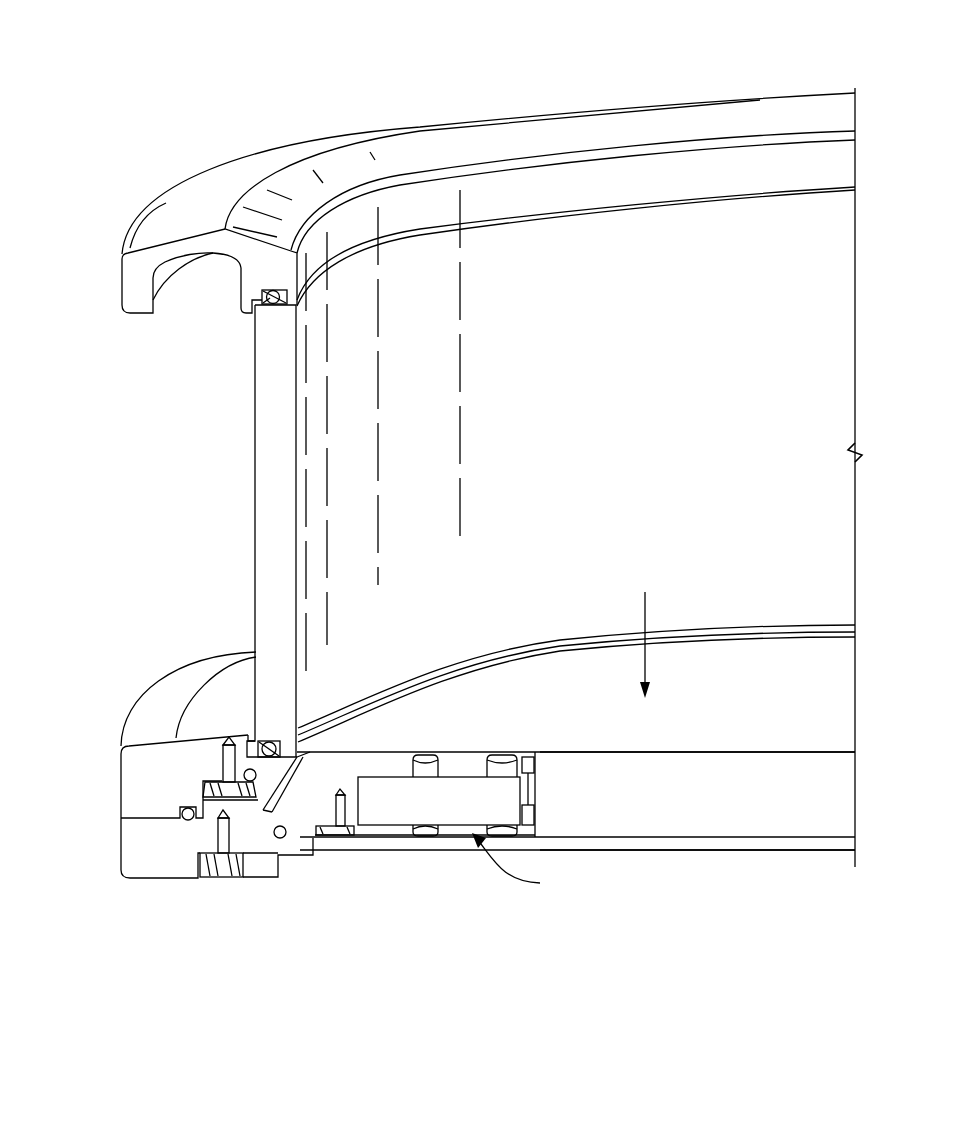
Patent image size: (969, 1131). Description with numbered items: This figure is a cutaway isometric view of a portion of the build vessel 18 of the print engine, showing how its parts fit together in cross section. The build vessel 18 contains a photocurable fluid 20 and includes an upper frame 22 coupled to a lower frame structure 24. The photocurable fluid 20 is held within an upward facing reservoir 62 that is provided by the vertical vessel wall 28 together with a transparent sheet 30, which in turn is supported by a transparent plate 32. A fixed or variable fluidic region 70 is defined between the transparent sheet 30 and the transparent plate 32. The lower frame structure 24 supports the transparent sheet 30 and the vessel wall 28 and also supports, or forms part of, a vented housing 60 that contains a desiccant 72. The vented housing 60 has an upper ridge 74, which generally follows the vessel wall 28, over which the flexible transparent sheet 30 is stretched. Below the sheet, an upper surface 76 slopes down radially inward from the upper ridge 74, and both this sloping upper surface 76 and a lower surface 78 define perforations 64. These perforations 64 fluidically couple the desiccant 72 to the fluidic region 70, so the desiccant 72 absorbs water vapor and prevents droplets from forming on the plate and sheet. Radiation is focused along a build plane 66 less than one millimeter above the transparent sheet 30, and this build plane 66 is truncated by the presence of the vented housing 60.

The build vessel 18 is at (345, 68).
The photocurable fluid 20 is at (672, 468).
The upper frame 22 is at (137, 283).
The lower frame structure 24 is at (103, 744).
The vessel wall 28 is at (262, 479).
The transparent sheet 30 is at (823, 752).
The transparent plate 32 is at (708, 850).
The vented housing 60 is at (308, 807).
The reservoir 62 is at (544, 416).
The perforations 64 is at (425, 763).
The build plane 66 is at (842, 701).
The fluidic region 70 is at (683, 772).
The desiccant 72 is at (433, 797).
The upper ridge 74 is at (297, 738).
The upper surface 76 is at (472, 770).
The lower surface 78 is at (459, 837).